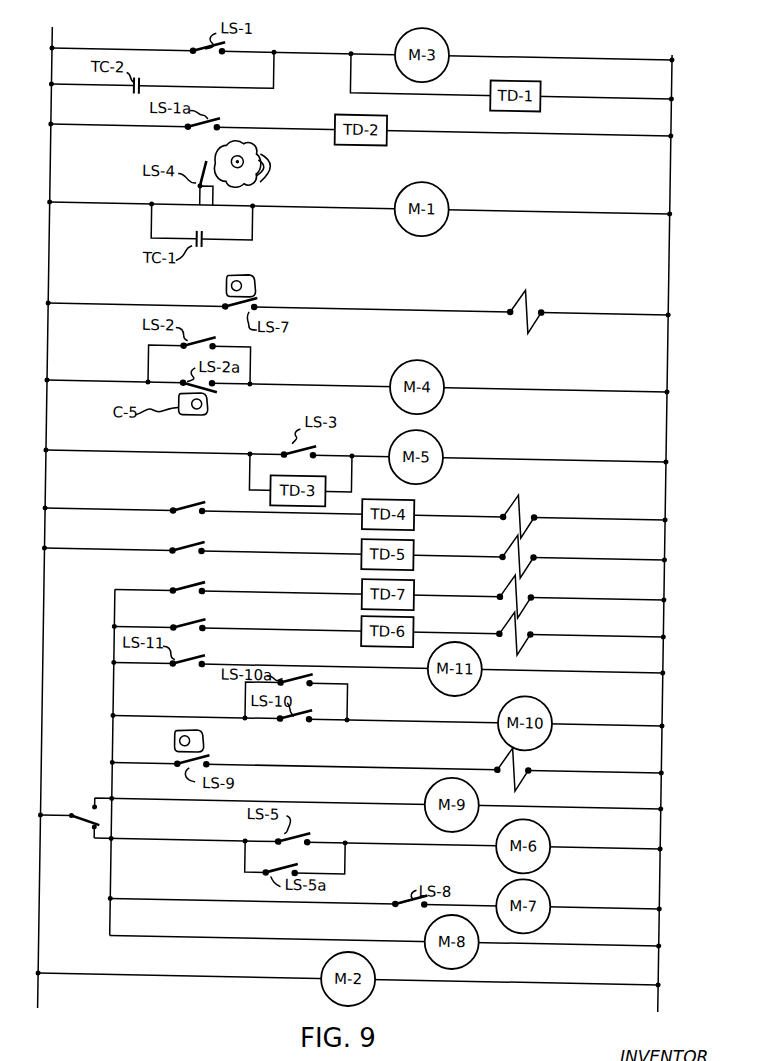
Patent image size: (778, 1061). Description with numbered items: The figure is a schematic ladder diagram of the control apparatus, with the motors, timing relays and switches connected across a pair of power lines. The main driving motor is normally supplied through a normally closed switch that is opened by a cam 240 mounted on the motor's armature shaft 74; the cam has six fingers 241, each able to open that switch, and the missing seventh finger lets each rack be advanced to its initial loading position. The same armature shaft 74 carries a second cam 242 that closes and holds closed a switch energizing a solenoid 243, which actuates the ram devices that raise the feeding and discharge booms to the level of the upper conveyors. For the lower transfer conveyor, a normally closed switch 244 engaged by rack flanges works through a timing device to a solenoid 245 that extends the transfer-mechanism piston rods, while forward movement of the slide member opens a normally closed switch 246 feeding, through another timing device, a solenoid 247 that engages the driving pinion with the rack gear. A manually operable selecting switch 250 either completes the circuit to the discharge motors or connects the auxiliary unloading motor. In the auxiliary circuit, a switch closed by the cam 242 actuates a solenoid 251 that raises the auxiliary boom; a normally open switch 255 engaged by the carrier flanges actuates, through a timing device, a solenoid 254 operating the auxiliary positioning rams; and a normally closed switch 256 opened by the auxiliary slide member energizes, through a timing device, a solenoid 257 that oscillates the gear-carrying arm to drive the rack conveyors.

The armature shaft 74 is at (218, 150).
The cam 240 is at (259, 150).
The finger 241 is at (270, 172).
The cam 242 is at (259, 283).
The solenoid 243 is at (529, 281).
The normally closed switch 244 is at (189, 499).
The solenoid 245 is at (525, 486).
The normally closed switch 246 is at (194, 542).
The solenoid 247 is at (525, 526).
The selecting switch 250 is at (89, 820).
The solenoid 251 is at (522, 739).
The solenoid 254 is at (523, 603).
The normally open switch 255 is at (177, 617).
The normally closed switch 256 is at (179, 580).
The solenoid 257 is at (523, 566).